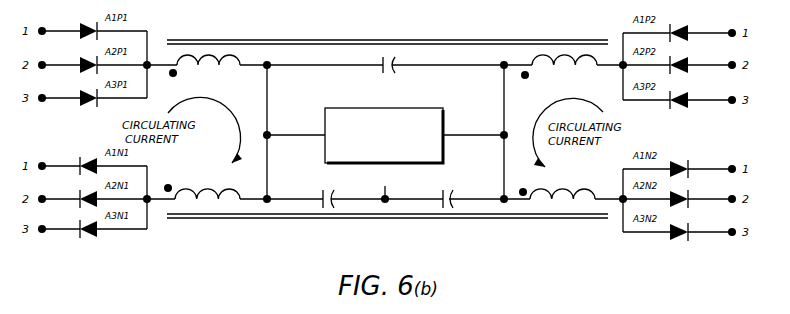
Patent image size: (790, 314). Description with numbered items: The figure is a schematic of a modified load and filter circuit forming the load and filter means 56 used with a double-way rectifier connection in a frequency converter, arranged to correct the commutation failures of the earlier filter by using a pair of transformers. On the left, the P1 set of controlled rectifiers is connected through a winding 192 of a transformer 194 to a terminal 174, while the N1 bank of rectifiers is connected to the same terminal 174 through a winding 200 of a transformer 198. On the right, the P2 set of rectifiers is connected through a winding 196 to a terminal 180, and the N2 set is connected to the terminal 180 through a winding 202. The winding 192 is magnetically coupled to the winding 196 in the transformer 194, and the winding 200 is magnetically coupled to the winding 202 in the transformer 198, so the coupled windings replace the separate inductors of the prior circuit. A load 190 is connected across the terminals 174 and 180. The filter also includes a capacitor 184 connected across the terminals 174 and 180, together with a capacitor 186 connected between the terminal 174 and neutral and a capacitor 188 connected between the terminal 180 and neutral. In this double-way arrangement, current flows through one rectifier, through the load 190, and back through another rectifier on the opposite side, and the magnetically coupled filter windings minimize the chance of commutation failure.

The load and filter means 56 is at (372, 187).
The terminal 174 is at (268, 132).
The terminal 180 is at (503, 133).
The capacitor 184 is at (384, 74).
The capacitor 186 is at (322, 190).
The capacitor 188 is at (450, 190).
The load 190 is at (396, 108).
The winding 192 is at (207, 70).
The transformer 194 is at (399, 42).
The winding 196 is at (567, 70).
The transformer 198 is at (414, 219).
The winding 200 is at (199, 190).
The winding 202 is at (557, 192).